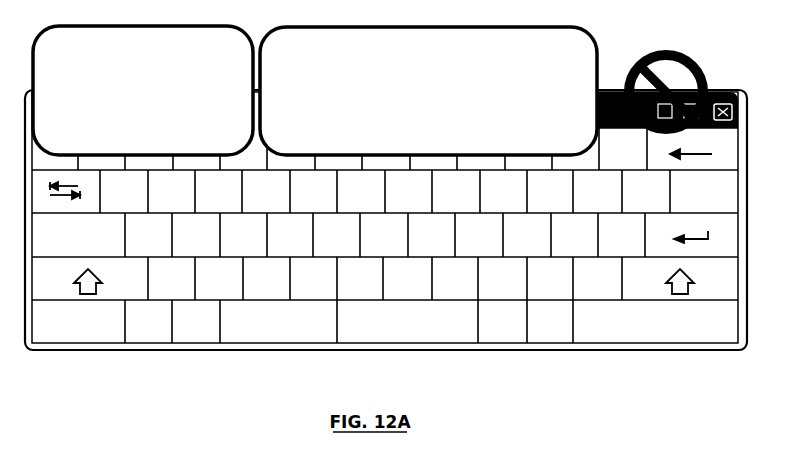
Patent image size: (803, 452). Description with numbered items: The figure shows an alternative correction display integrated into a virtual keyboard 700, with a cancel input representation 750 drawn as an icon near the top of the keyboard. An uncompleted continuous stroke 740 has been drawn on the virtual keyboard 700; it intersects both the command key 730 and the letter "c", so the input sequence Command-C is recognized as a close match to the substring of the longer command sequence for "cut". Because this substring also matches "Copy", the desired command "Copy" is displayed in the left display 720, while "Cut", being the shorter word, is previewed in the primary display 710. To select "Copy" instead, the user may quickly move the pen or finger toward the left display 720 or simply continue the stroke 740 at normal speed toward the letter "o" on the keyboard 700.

The virtual keyboard 700 is at (140, 388).
The primary display 710 is at (428, 91).
The left display 720 is at (143, 90).
The command key 730 is at (240, 337).
The continuous stroke 740 is at (265, 285).
The cancel input representation 750 is at (703, 73).